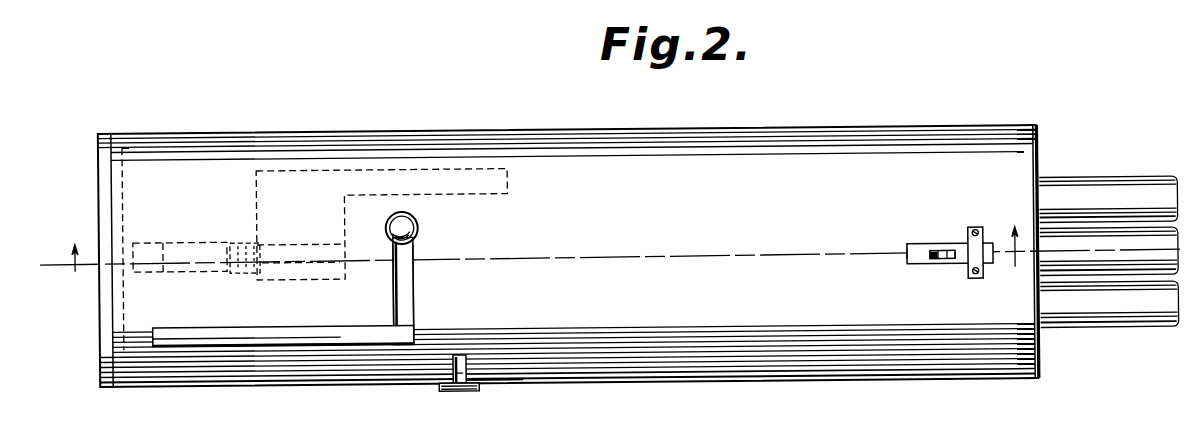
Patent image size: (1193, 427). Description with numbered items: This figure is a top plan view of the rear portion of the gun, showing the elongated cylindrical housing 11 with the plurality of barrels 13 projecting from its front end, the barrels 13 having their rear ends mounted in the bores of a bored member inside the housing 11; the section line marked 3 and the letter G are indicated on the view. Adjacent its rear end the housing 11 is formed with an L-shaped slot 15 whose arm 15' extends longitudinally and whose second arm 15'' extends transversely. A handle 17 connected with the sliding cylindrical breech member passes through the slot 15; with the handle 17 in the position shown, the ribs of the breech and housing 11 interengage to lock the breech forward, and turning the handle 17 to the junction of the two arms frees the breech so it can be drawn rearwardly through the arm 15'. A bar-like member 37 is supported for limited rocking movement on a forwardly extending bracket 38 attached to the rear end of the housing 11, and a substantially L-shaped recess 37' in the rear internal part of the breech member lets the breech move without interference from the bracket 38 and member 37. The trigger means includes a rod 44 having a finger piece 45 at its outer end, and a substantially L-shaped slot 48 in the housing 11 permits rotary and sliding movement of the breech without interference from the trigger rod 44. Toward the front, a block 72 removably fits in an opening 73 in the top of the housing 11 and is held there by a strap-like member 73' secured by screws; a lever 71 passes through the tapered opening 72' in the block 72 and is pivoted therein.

The housing 11 is at (830, 358).
The barrels 13 is at (1112, 243).
The section line 3- 3 is at (611, 251).
The L-shaped slot 15 is at (429, 291).
The longitudinal arm of slot 15' is at (284, 370).
The transverse arm of slot 15'' is at (437, 279).
The handle 17 is at (418, 223).
The bar-like member 37 is at (301, 234).
The L-shaped recess 37' is at (382, 190).
The bracket 38 is at (200, 237).
The trigger rod 44 is at (466, 354).
The finger piece 45 is at (455, 391).
The L-shaped slot 48 is at (490, 381).
The lever 71 is at (941, 253).
The second block 72 is at (949, 272).
The opening in block 72' is at (925, 235).
The opening in housing 73 is at (883, 271).
The strap-like member 73' is at (993, 232).
The gas inlet G is at (1058, 178).